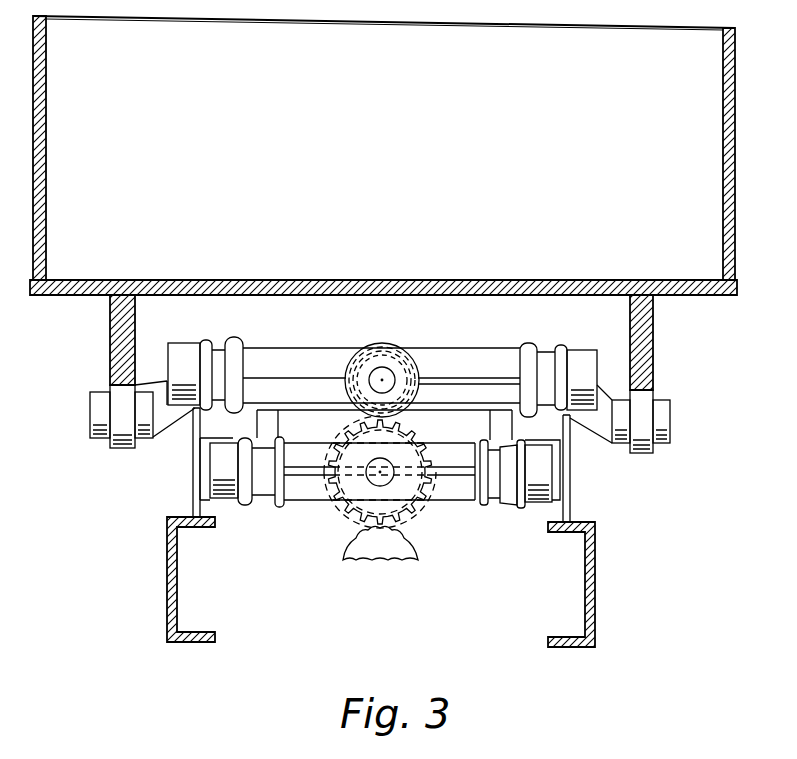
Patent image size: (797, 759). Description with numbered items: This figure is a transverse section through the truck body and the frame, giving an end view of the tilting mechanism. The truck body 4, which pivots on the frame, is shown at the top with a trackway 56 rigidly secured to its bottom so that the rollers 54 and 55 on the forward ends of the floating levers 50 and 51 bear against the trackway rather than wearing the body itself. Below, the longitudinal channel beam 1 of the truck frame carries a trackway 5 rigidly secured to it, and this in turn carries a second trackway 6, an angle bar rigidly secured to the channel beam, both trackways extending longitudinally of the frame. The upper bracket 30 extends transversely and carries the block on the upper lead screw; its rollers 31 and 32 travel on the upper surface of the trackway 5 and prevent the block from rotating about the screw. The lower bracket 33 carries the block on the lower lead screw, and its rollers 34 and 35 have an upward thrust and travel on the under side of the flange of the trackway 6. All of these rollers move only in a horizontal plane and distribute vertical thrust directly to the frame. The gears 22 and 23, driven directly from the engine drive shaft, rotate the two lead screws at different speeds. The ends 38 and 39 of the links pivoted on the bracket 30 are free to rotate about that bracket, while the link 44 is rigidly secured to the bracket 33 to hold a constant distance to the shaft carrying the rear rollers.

The longitudinal beam 1 is at (167, 592).
The truck body 4 is at (383, 155).
The trackway 5 is at (193, 471).
The second trackway 6 is at (545, 445).
The gear 22 is at (402, 348).
The gear 23 is at (418, 455).
The bracket 30 is at (381, 375).
The roller 31 is at (582, 351).
The roller 32 is at (193, 348).
The bracket 33 is at (379, 473).
The roller 34 is at (537, 505).
The roller 35 is at (230, 500).
The end of link 38 is at (528, 356).
The end of link 39 is at (243, 345).
The link 44 is at (281, 443).
The floating lever 50 is at (671, 414).
The floating lever 51 is at (90, 418).
The roller 54 is at (653, 452).
The roller 55 is at (122, 449).
The trackway 56 is at (110, 331).